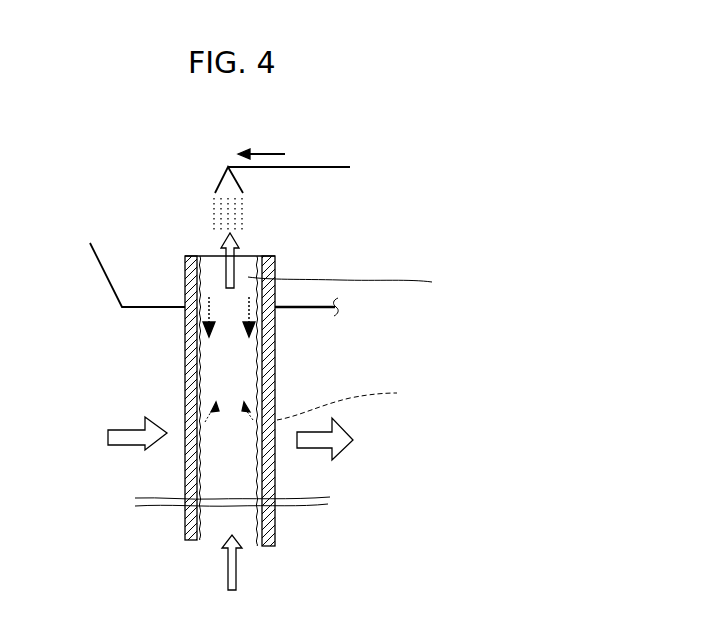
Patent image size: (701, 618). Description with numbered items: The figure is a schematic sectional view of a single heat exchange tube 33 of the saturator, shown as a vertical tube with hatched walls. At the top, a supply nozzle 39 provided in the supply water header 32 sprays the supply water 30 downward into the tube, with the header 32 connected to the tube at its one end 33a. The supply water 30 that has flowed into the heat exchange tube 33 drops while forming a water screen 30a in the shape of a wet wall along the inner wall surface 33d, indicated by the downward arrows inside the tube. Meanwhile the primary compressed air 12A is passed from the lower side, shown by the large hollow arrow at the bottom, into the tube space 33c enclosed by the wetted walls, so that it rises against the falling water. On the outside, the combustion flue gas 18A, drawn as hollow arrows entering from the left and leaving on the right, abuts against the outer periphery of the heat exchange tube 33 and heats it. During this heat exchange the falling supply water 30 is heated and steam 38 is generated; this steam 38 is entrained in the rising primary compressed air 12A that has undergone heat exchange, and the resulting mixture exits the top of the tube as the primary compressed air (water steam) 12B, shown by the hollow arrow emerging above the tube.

The supply water 30 is at (268, 148).
The water screen 30a is at (363, 289).
The supply water header 32 is at (102, 273).
The heat exchange tube 33 is at (276, 384).
The one end 33a is at (290, 308).
The tube space 33c is at (216, 476).
The wall surface 33d is at (277, 481).
The steam 38 is at (353, 402).
The supply nozzle 39 is at (237, 182).
The primary compressed air 12A is at (240, 580).
The primary compressed air (water steam) 12B is at (220, 248).
The combustion flue gas 18A is at (123, 430).